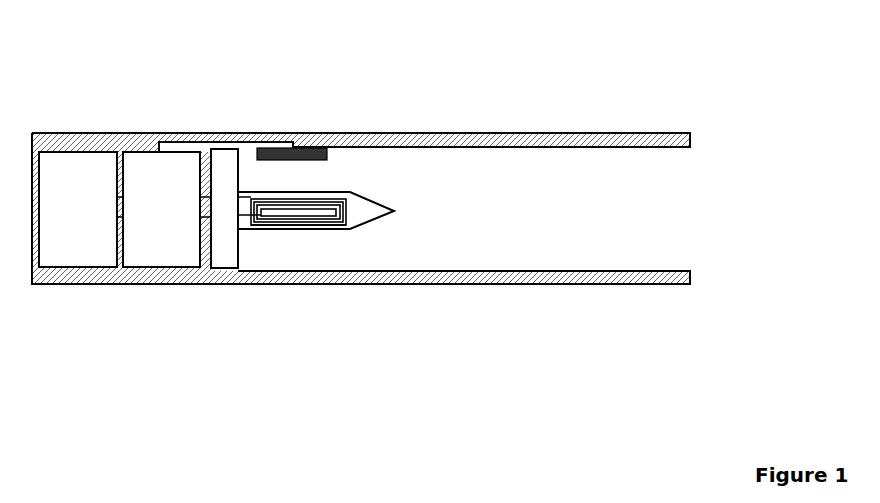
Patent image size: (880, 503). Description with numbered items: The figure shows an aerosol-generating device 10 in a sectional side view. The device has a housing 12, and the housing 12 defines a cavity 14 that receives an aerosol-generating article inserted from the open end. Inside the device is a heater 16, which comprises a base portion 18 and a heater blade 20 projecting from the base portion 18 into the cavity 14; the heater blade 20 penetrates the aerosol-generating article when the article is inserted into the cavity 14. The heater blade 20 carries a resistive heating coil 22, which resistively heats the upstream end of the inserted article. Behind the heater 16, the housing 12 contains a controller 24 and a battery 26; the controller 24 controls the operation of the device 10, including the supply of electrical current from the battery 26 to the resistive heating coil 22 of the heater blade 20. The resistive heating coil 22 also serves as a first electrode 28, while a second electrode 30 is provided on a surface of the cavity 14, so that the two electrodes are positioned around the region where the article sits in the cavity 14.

The aerosol-generating device 10 is at (649, 117).
The housing 12 is at (608, 275).
The cavity 14 is at (535, 169).
The heater 16 is at (372, 189).
The base portion 18 is at (225, 257).
The heater blade 20 is at (364, 211).
The resistive heating coil 22 is at (307, 217).
The controller 24 is at (169, 219).
The battery 26 is at (86, 219).
The first electrode 28 is at (278, 226).
The second electrode 30 is at (309, 153).